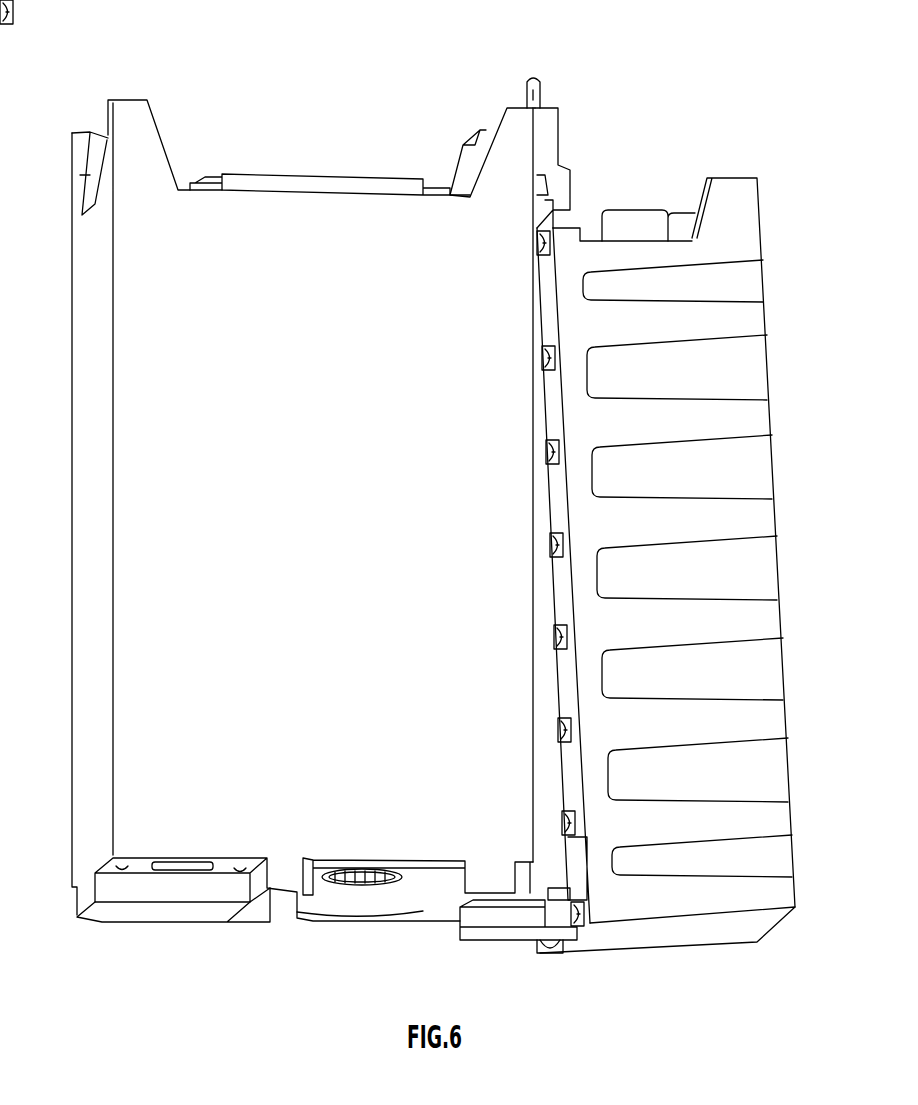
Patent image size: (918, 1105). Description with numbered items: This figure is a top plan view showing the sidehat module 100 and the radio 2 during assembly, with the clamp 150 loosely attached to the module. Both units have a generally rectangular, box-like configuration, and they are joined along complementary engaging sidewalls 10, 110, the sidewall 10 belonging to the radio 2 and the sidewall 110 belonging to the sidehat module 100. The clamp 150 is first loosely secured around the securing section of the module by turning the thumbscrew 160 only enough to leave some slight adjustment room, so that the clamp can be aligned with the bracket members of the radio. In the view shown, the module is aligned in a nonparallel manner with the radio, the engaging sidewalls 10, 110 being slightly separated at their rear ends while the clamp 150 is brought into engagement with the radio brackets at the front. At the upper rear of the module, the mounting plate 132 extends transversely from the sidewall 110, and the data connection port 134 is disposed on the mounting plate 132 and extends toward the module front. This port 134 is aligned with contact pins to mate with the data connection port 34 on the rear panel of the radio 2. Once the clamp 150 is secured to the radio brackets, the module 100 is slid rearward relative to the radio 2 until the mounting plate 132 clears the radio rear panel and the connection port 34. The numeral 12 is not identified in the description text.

The radio 2 is at (72, 306).
The shelf bar 12 is at (195, 262).
The thumbscrew 160 is at (525, 88).
The clamp 150 is at (558, 138).
The sidehat module 100 is at (767, 280).
The sidewall of the sidehat module 110 is at (568, 588).
The sidewall of the radio 10 is at (535, 522).
The data connection port 34 is at (427, 880).
The mounting plate 132 is at (508, 925).
The data connection port 134 is at (537, 892).